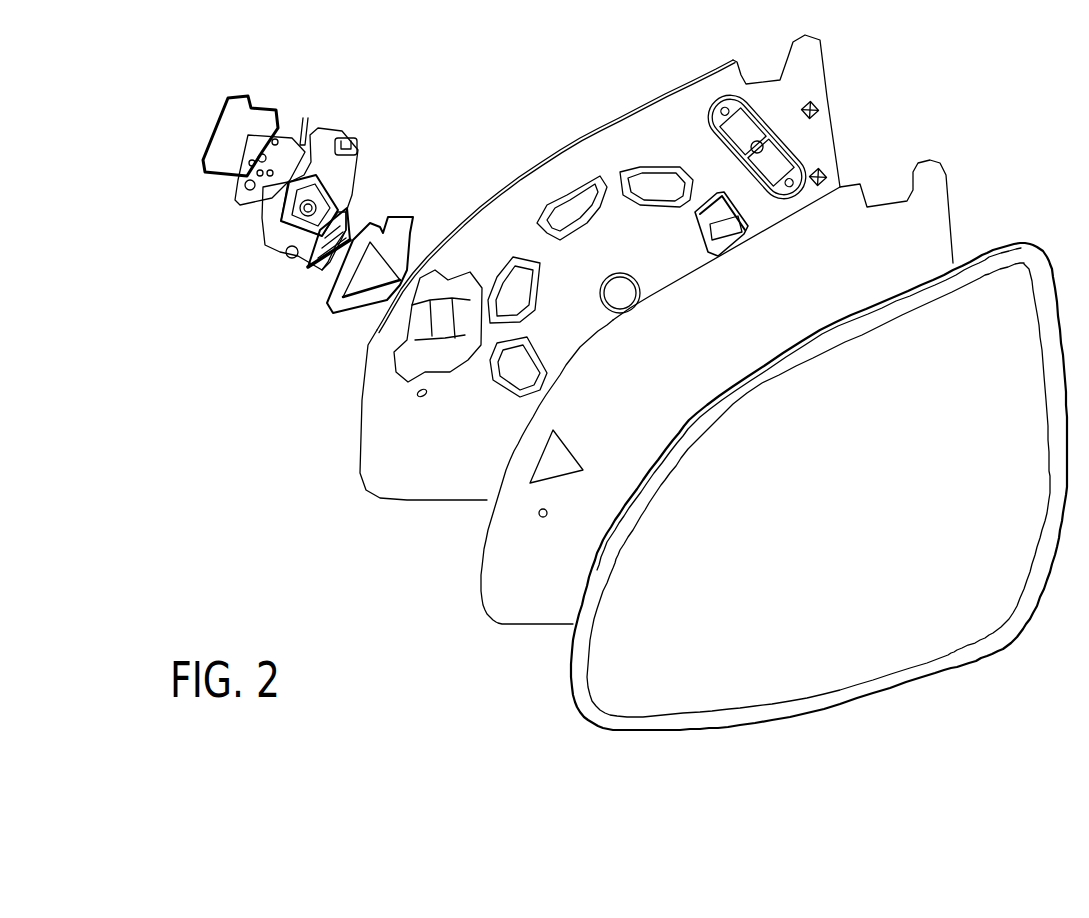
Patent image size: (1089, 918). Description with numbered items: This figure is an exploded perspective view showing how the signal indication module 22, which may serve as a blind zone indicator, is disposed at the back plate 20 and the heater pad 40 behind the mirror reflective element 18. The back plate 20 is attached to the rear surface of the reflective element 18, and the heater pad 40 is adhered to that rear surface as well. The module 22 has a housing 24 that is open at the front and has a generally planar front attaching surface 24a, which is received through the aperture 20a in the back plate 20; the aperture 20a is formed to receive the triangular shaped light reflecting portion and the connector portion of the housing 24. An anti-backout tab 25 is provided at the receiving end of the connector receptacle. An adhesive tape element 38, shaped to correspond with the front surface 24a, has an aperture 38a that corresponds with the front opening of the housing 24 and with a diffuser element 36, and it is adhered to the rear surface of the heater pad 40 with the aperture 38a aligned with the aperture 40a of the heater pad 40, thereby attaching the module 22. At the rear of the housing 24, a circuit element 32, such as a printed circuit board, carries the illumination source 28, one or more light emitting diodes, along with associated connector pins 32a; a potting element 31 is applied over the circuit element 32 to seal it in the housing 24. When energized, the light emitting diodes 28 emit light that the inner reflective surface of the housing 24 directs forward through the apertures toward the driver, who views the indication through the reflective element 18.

The mirror reflective element 18 is at (940, 623).
The back plate 20 is at (629, 267).
The aperture in the back plate 20a is at (437, 330).
The signal indication module 22 is at (394, 57).
The housing 24 is at (335, 204).
The front attaching surface of the housing 24a is at (343, 170).
The anti-backout tab 25 is at (360, 140).
The illumination source 28 is at (260, 163).
The potting element 31 is at (247, 97).
The circuit element 32 is at (256, 150).
The connector pins 32a is at (305, 143).
The diffuser element 36 is at (337, 247).
The adhesive tape element 38 is at (389, 282).
The aperture of the adhesive tape 38a is at (370, 277).
The heater pad 40 is at (714, 392).
The aperture of the heater pad 40a is at (550, 463).